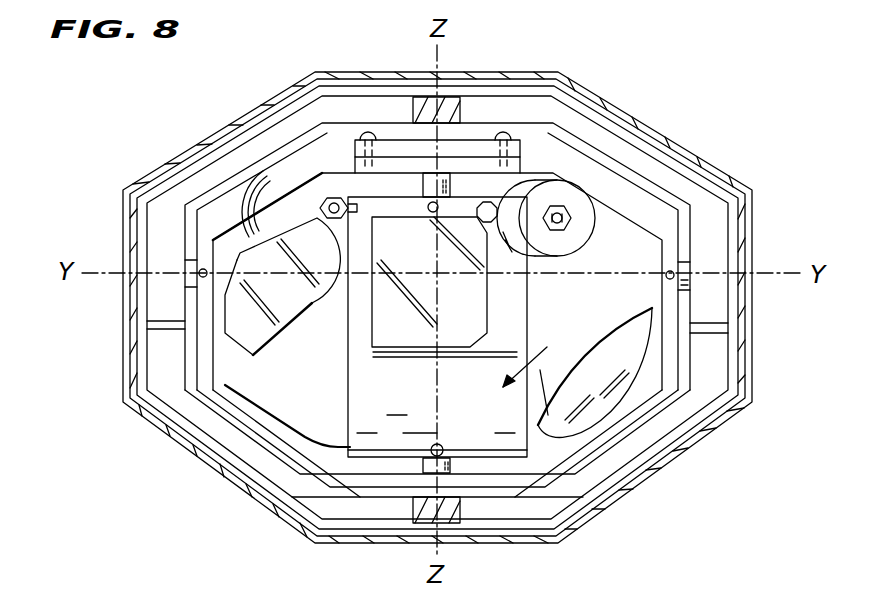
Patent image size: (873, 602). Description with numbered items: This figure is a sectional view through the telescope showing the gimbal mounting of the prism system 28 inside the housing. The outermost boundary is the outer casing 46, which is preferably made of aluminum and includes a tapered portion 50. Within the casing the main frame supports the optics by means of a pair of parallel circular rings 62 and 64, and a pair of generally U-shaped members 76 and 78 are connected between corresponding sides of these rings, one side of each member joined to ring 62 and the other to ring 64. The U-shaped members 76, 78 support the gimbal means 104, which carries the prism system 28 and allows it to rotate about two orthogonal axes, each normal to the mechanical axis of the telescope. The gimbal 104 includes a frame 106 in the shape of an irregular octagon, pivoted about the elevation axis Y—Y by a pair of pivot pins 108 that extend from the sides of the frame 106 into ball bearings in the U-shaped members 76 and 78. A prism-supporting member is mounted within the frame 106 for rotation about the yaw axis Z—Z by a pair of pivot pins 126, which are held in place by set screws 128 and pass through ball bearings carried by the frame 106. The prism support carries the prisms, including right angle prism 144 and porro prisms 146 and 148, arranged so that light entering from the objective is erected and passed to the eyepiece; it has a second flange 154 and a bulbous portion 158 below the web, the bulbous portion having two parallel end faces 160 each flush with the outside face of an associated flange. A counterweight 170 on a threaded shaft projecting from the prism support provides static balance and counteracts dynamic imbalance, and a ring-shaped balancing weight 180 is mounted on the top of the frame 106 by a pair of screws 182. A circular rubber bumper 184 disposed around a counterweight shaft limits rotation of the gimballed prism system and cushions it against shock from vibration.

The prism system 28 is at (536, 352).
The outer casing 46 is at (623, 117).
The tapered portion 50 is at (523, 72).
The circular ring 62 is at (467, 100).
The circular ring 64 is at (387, 513).
The U-shaped member 76 is at (152, 225).
The U-shaped member 78 is at (713, 225).
The gimbal means 104 is at (685, 335).
The frame 106 is at (637, 220).
The pivot pin 108 is at (185, 287).
The pivot pin 126 is at (447, 182).
The set screw 128 is at (433, 212).
The right angle prism 144 is at (473, 327).
The porro prism 146 is at (612, 393).
The porro prism 148 is at (263, 390).
The second flange 154 is at (362, 347).
The bulbous portion 158 is at (503, 443).
The end face 160 is at (345, 410).
The counterweight 170 is at (563, 175).
The balancing weight 180 is at (358, 133).
The screw 182 is at (370, 133).
The rubber bumper 184 is at (263, 173).